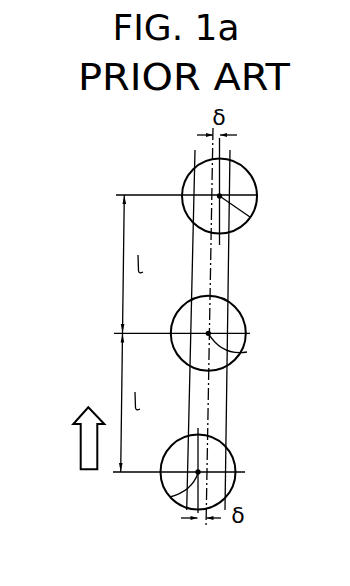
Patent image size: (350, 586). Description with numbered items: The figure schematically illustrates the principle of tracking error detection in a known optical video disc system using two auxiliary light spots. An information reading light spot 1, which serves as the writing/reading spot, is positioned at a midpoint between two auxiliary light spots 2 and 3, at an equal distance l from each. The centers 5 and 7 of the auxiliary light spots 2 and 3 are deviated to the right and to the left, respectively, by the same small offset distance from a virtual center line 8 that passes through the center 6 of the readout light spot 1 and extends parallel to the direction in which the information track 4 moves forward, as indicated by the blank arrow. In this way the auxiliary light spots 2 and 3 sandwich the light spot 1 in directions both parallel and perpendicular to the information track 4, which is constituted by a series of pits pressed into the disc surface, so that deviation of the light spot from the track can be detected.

The information reading light spot 1 is at (238, 310).
The auxiliary light spot 2 is at (255, 182).
The auxiliary light spot 3 is at (232, 452).
The information track 4 is at (230, 152).
The center of auxiliary light spot 5 is at (250, 218).
The center of readout light spot 6 is at (247, 352).
The center of auxiliary light spot 7 is at (170, 497).
The virtual center line 8 is at (203, 527).